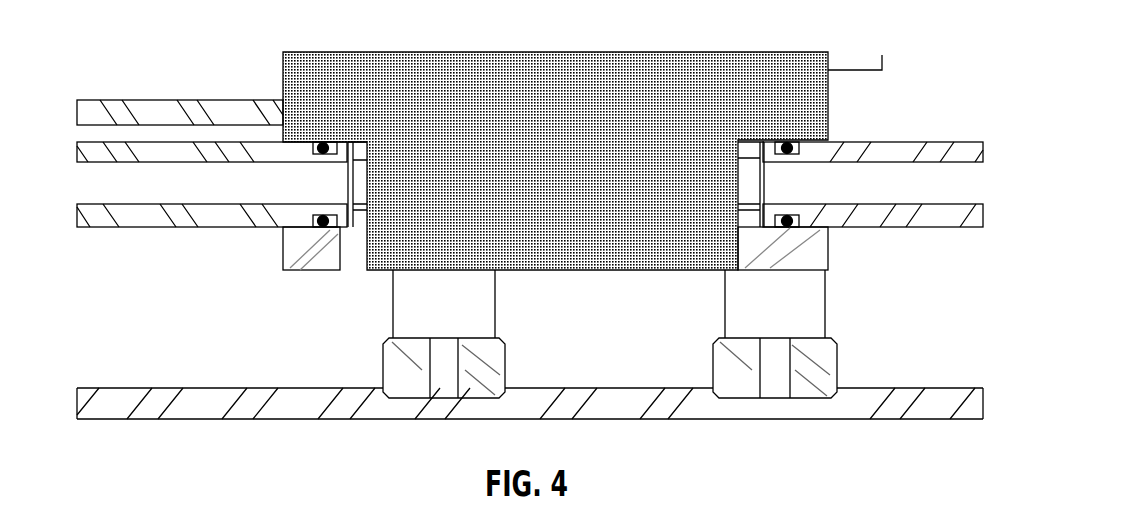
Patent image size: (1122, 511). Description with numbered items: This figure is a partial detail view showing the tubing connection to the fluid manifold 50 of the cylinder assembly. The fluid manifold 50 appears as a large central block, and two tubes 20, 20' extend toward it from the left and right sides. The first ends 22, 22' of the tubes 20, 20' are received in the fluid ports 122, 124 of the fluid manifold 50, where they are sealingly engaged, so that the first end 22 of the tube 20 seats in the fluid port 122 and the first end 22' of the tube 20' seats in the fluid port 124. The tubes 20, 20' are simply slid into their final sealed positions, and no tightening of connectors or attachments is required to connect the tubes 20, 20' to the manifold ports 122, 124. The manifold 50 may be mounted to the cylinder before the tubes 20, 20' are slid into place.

The fluid manifold 50 is at (526, 174).
The tube 20 is at (212, 213).
The tube 20' is at (873, 225).
The first end 22 is at (319, 237).
The first end 22' is at (828, 234).
The fluid port 122 is at (369, 191).
The fluid port 124 is at (747, 192).